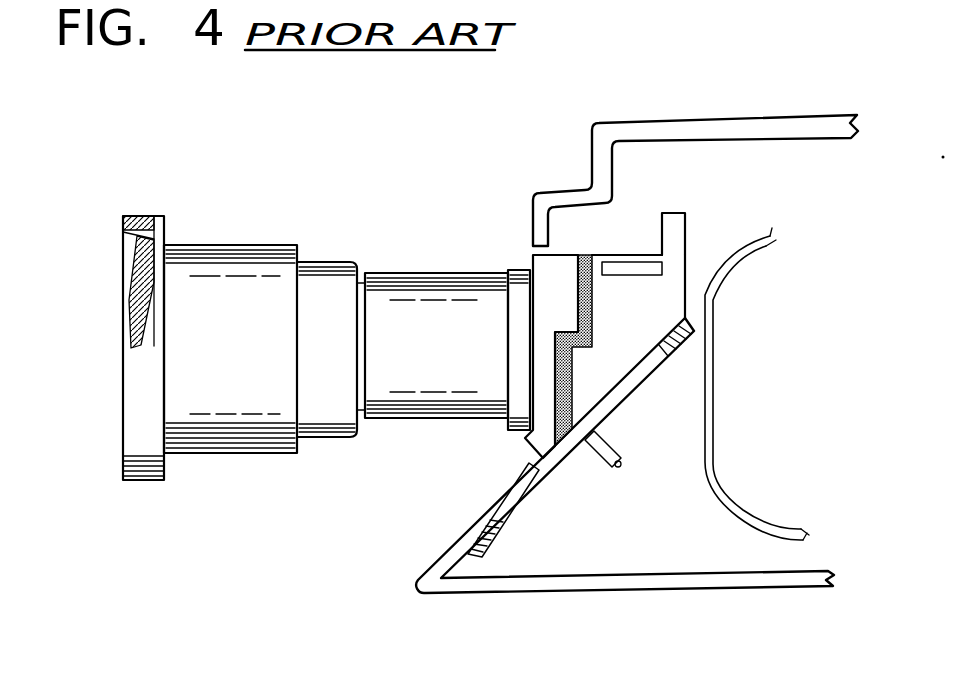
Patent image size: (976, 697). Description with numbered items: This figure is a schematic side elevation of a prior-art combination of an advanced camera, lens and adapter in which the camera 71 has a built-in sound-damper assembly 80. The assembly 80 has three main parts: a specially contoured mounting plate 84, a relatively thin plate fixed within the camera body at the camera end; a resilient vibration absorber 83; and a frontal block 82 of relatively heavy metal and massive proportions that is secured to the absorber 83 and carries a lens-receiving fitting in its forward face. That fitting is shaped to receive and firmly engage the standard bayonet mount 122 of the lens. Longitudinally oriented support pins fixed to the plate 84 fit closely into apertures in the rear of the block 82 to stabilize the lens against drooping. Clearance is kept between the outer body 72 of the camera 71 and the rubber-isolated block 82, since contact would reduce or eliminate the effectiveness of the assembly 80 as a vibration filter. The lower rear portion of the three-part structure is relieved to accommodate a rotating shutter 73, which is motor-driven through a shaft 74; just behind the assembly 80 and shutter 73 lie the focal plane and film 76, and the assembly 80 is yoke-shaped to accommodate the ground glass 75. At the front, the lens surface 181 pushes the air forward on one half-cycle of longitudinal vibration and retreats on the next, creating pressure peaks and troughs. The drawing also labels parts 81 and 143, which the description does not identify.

The camera 71 is at (397, 573).
The outer body 72 is at (628, 126).
The rotating shutter 73 is at (515, 521).
The shaft 74 is at (624, 463).
The ground glass 75 is at (672, 265).
The film 76 is at (727, 272).
The sound-damper assembly 80 is at (643, 252).
The lens barrel 81 is at (213, 403).
The frontal block 82 is at (551, 356).
The resilient vibration absorber 83 is at (592, 307).
The mounting plate 84 is at (638, 299).
The standard bayonet mount 122 is at (522, 290).
The adapter ring 143 is at (330, 397).
The lens surface 181 is at (138, 258).